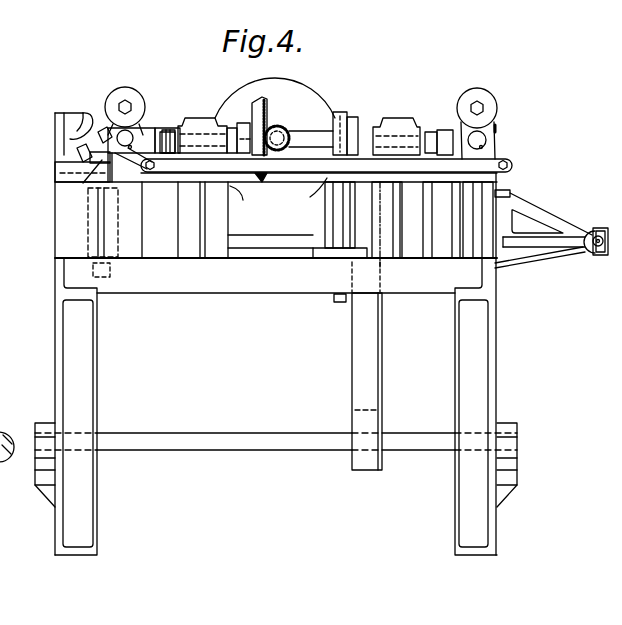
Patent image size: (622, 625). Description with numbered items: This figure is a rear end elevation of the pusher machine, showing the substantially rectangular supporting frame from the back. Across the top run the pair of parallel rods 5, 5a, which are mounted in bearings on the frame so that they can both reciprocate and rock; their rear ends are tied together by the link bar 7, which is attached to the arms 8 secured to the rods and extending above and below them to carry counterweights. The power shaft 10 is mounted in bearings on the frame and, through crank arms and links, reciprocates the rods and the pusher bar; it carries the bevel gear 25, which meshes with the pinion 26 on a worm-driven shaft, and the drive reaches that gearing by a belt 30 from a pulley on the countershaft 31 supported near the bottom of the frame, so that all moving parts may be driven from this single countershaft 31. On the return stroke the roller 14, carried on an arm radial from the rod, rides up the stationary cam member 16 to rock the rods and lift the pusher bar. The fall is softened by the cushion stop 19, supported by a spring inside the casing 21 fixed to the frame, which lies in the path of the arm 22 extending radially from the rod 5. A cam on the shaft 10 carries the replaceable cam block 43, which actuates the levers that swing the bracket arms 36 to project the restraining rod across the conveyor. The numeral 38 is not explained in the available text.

The rod 5 is at (123, 133).
The rod 5a is at (482, 141).
The link bar 7 is at (308, 170).
The arm 8 is at (146, 152).
The power shaft 10 is at (305, 137).
The roller 14 is at (80, 157).
The stationary cam member 16 is at (85, 112).
The cushion stop 19 is at (100, 163).
The casing 21 is at (108, 212).
The arm 22 is at (98, 148).
The bevel gear 25 is at (262, 104).
The pinion 26 is at (278, 128).
The belt 30 is at (388, 342).
The countershaft 31 is at (266, 426).
The bracket arm 36 is at (557, 214).
The pivot pin 38 is at (583, 249).
The cam block 43 is at (350, 120).